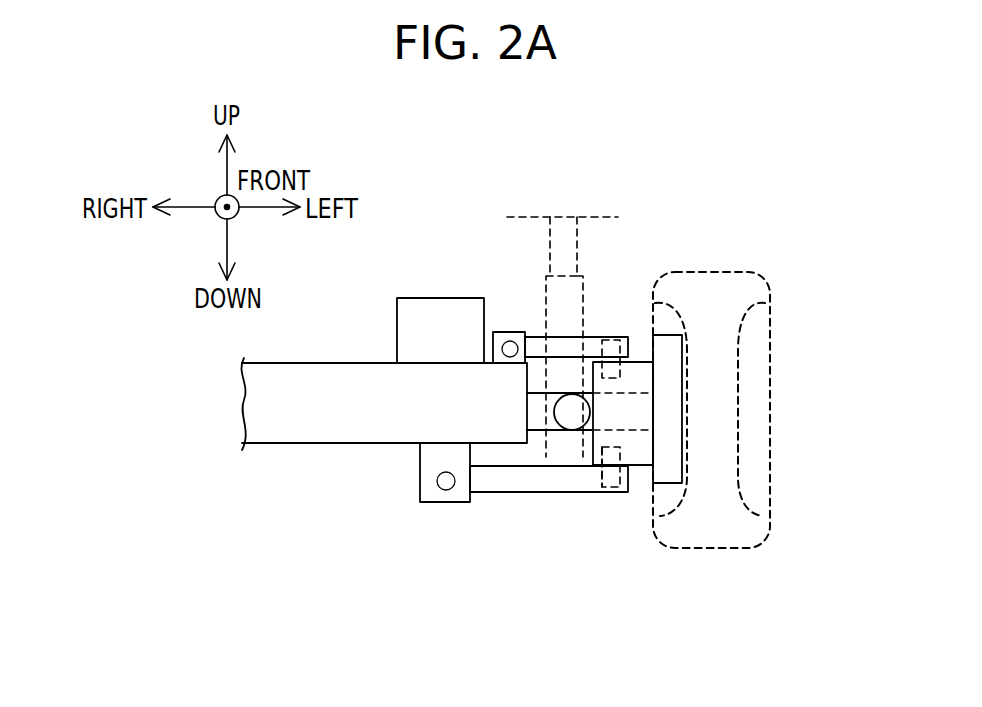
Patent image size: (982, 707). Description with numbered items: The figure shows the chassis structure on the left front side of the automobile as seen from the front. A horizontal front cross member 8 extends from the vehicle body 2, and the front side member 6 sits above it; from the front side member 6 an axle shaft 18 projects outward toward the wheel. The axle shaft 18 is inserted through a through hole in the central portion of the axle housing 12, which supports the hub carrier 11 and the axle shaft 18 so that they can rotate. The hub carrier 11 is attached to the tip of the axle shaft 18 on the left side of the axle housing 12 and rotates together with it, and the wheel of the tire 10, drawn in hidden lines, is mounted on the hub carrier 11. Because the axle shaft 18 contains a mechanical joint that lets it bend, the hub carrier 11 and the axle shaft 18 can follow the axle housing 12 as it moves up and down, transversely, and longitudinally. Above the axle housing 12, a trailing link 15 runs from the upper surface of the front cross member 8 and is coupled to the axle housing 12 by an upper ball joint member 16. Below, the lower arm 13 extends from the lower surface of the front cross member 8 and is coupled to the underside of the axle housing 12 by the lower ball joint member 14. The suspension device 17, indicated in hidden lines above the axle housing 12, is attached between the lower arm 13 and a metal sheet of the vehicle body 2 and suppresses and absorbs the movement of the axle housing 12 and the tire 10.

The vehicle body 2 is at (530, 215).
The front side member 6 is at (422, 315).
The front cross member 8 is at (305, 420).
The tire 10 is at (722, 458).
The hub carrier 11 is at (667, 395).
The axle housing 12 is at (638, 447).
The lower arm 13 is at (493, 477).
The lower ball joint member 14 is at (601, 488).
The trailing link 15 is at (538, 345).
The upper ball joint member 16 is at (617, 336).
The suspension device 17 is at (587, 252).
The axle shaft 18 is at (537, 418).